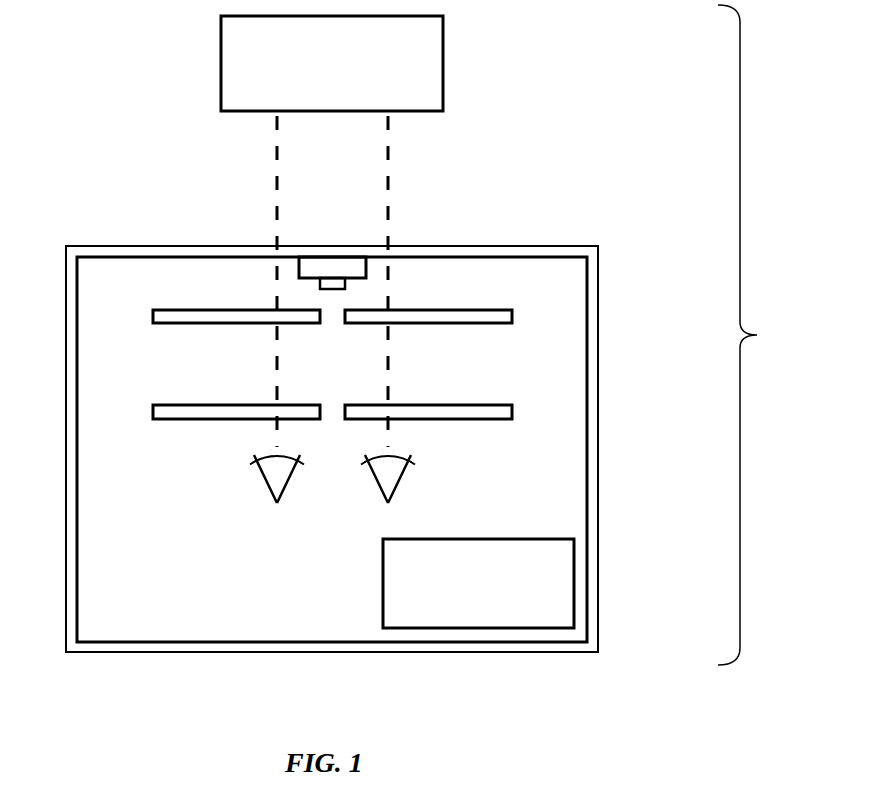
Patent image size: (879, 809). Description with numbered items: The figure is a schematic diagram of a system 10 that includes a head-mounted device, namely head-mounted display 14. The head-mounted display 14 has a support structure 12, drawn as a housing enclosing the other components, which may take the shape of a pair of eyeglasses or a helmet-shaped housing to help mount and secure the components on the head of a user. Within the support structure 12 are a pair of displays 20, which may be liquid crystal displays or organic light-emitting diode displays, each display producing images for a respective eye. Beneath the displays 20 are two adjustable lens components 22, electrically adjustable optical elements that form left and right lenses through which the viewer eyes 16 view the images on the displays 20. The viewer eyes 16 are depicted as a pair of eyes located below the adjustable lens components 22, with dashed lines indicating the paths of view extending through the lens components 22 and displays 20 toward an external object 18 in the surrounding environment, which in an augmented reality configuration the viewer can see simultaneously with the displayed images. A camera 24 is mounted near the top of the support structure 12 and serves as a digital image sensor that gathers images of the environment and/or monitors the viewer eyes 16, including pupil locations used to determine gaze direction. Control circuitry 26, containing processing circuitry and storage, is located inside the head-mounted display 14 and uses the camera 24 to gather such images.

The system 10 is at (749, 335).
The support structure 12 is at (599, 311).
The head-mounted display 14 is at (622, 260).
The viewer eyes 16 is at (268, 484).
The object 18 is at (443, 58).
The displays 20 is at (170, 323).
The adjustable lens components 22 is at (170, 419).
The camera 24 is at (366, 262).
The control circuitry 26 is at (552, 539).